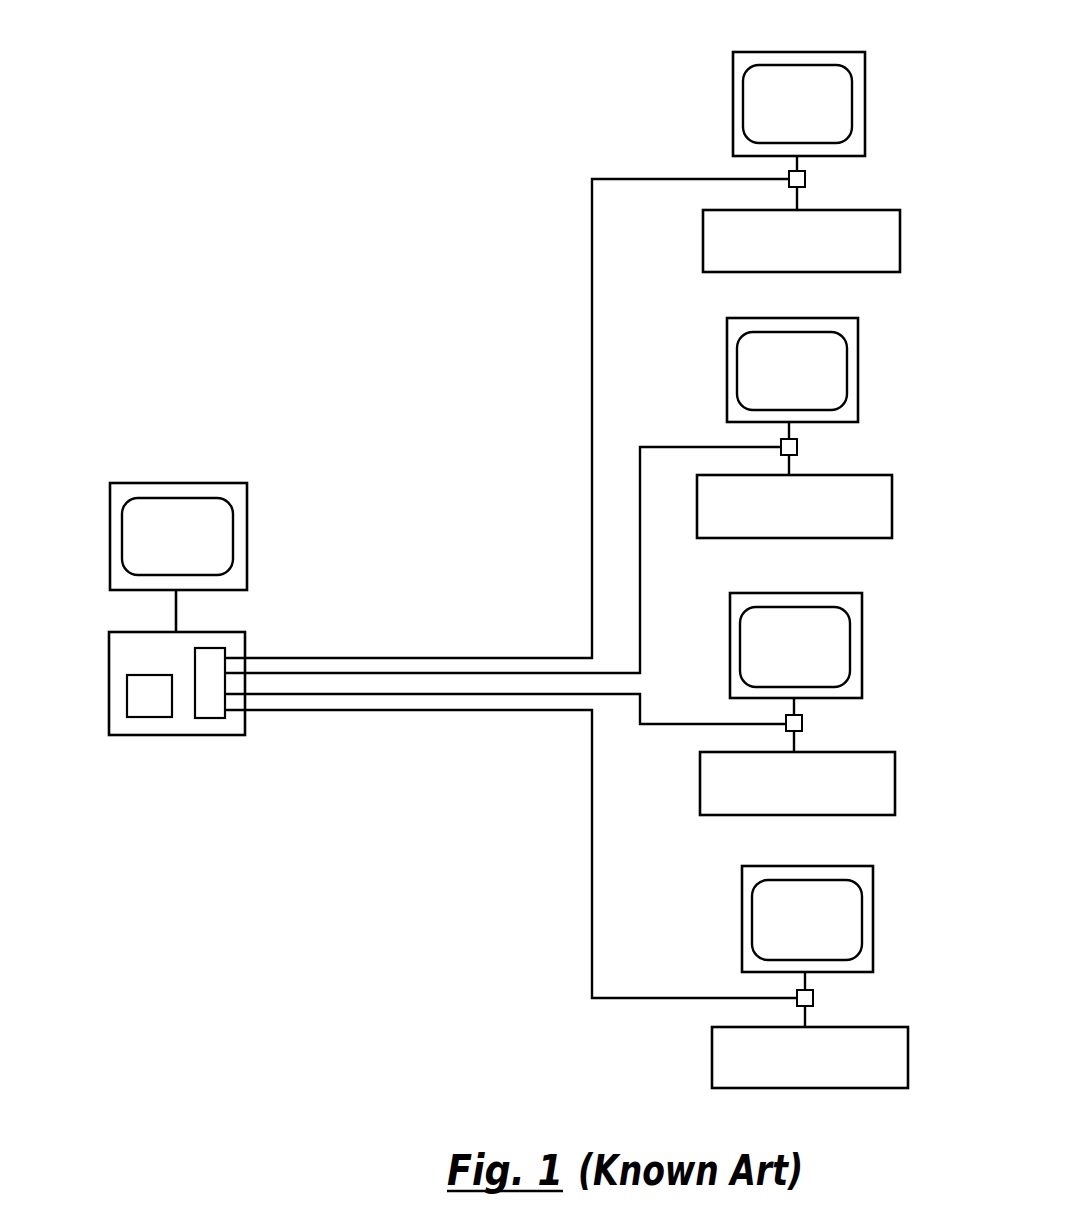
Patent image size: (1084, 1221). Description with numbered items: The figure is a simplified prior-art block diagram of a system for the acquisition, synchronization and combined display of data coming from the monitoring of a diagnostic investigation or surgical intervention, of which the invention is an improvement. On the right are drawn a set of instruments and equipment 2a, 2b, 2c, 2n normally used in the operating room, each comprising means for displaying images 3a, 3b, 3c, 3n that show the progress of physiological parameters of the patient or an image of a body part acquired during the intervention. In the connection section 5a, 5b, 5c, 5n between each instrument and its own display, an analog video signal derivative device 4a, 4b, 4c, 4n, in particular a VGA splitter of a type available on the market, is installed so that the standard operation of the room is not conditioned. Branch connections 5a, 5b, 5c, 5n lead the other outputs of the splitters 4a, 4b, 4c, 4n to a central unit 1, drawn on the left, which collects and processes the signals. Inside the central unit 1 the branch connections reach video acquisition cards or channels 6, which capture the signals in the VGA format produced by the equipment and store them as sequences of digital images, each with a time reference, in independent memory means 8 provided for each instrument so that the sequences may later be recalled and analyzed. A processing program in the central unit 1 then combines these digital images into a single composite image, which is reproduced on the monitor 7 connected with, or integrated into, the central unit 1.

The central unit 1 is at (230, 632).
The video acquisition cards 6 is at (205, 687).
The monitor 7 is at (228, 497).
The independent memory means 8 is at (148, 699).
The instrument or equipment 2a is at (865, 242).
The instrument or equipment 2b is at (860, 508).
The instrument or equipment 2c is at (865, 785).
The instrument or equipment 2n is at (875, 1060).
The image display means 3a is at (855, 68).
The image display means 3b is at (845, 334).
The image display means 3c is at (848, 608).
The image display means 3n is at (860, 880).
The analog video signal splitter 4a is at (805, 180).
The analog video signal splitter 4b is at (797, 448).
The analog video signal splitter 4c is at (803, 723).
The analog video signal splitter 4n is at (813, 997).
The branch connection 5a is at (800, 196).
The branch connection 5b is at (792, 463).
The branch connection 5c is at (797, 742).
The branch connection 5n is at (807, 1016).